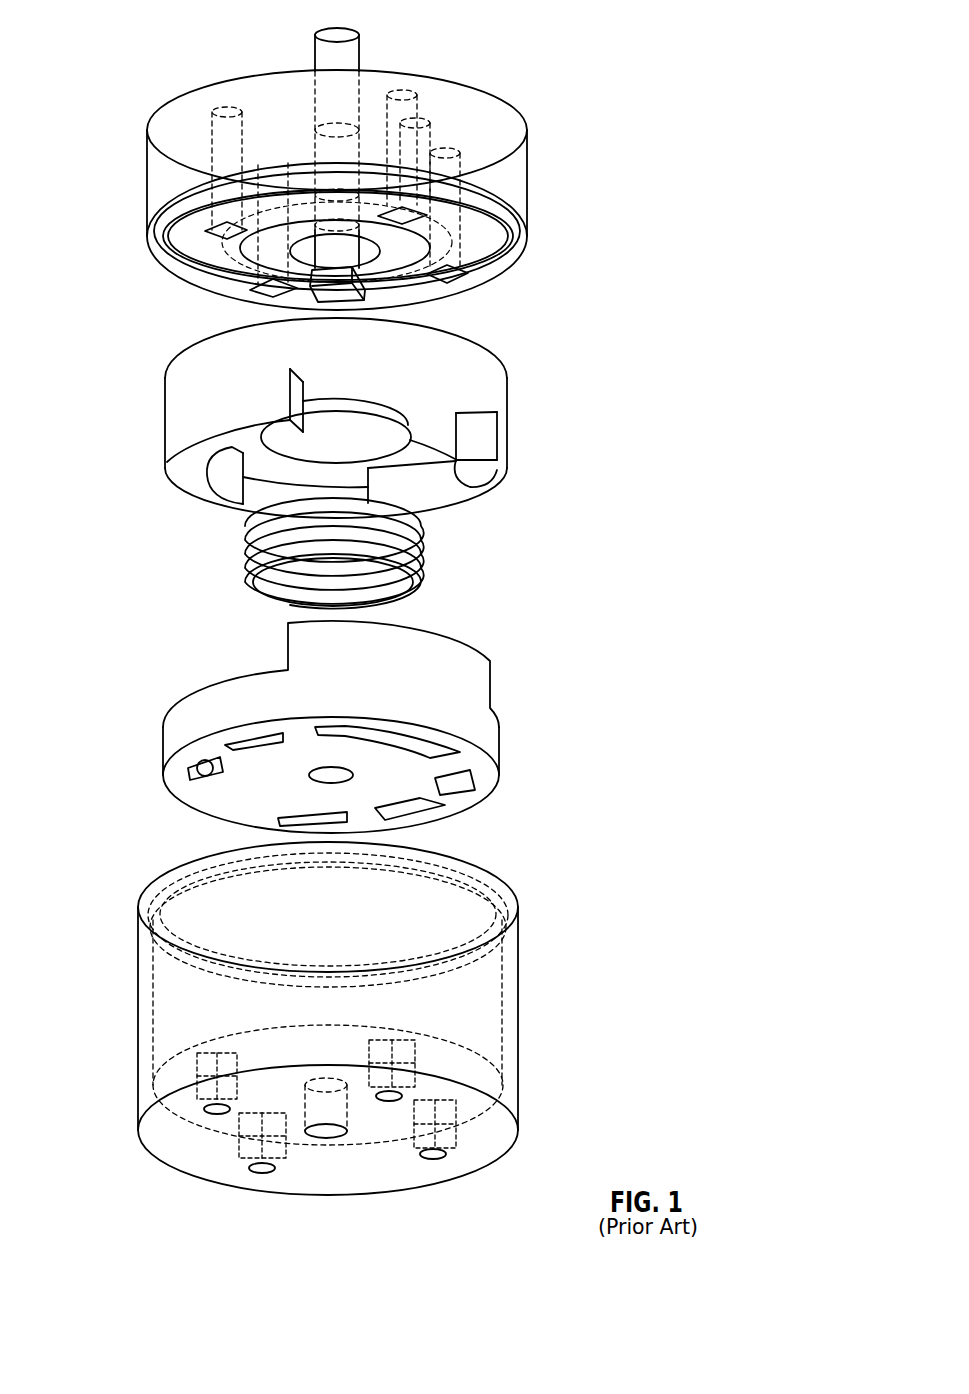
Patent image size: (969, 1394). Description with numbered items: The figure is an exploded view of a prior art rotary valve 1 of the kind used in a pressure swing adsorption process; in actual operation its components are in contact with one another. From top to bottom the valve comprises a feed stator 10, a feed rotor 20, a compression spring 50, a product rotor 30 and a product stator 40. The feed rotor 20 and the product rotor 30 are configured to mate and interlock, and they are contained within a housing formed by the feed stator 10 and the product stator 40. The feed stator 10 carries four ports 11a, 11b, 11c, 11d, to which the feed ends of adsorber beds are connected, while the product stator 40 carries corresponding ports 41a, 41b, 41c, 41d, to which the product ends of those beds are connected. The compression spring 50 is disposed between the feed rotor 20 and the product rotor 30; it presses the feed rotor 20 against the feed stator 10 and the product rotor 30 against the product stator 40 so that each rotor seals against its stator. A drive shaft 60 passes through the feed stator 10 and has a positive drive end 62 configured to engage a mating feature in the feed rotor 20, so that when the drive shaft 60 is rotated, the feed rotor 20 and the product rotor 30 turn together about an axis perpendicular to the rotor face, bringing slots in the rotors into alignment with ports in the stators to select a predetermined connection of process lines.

The rotary valve 1 is at (88, 52).
The feed stator 10 is at (528, 167).
The port 11a is at (273, 163).
The port 11b is at (229, 108).
The port 11c is at (403, 92).
The port 11d is at (446, 150).
The drive shaft 60 is at (370, 52).
The positive drive end 62 is at (372, 293).
The feed rotor 20 is at (503, 386).
The compression spring 50 is at (421, 557).
The product rotor 30 is at (500, 747).
The product stator 40 is at (518, 958).
The port 41a is at (262, 1173).
The port 41b is at (215, 1114).
The port 41c is at (389, 1101).
The port 41d is at (433, 1159).